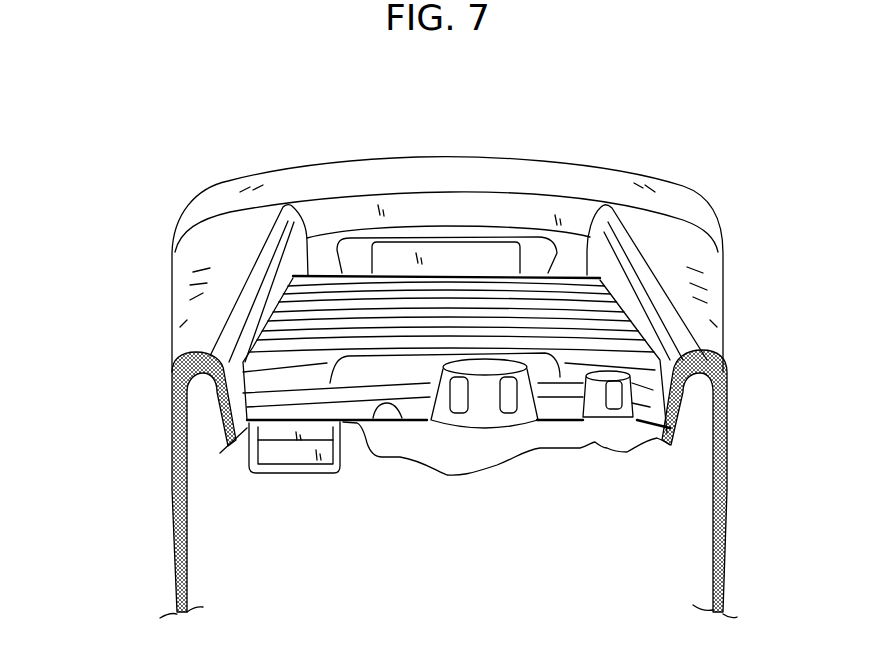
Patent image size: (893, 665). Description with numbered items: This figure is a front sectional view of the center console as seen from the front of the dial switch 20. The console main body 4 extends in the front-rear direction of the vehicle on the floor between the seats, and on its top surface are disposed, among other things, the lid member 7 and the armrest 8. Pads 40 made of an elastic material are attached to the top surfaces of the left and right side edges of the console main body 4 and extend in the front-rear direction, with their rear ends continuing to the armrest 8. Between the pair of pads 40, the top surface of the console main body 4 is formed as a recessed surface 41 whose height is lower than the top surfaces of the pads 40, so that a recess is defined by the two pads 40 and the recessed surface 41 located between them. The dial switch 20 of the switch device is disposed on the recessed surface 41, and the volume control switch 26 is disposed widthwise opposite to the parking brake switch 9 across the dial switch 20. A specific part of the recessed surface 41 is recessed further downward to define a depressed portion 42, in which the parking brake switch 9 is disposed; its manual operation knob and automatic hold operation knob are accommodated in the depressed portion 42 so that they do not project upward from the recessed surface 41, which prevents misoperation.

The console main body 4 is at (178, 553).
The lid member 7 is at (321, 320).
The armrest 8 is at (445, 172).
The parking brake switch 9 is at (290, 456).
The dial switch 20 is at (485, 413).
The volume control switch 26 is at (598, 411).
The pad 40 is at (172, 289).
The recessed surface 41 is at (398, 421).
The depressed portion 42 is at (277, 473).